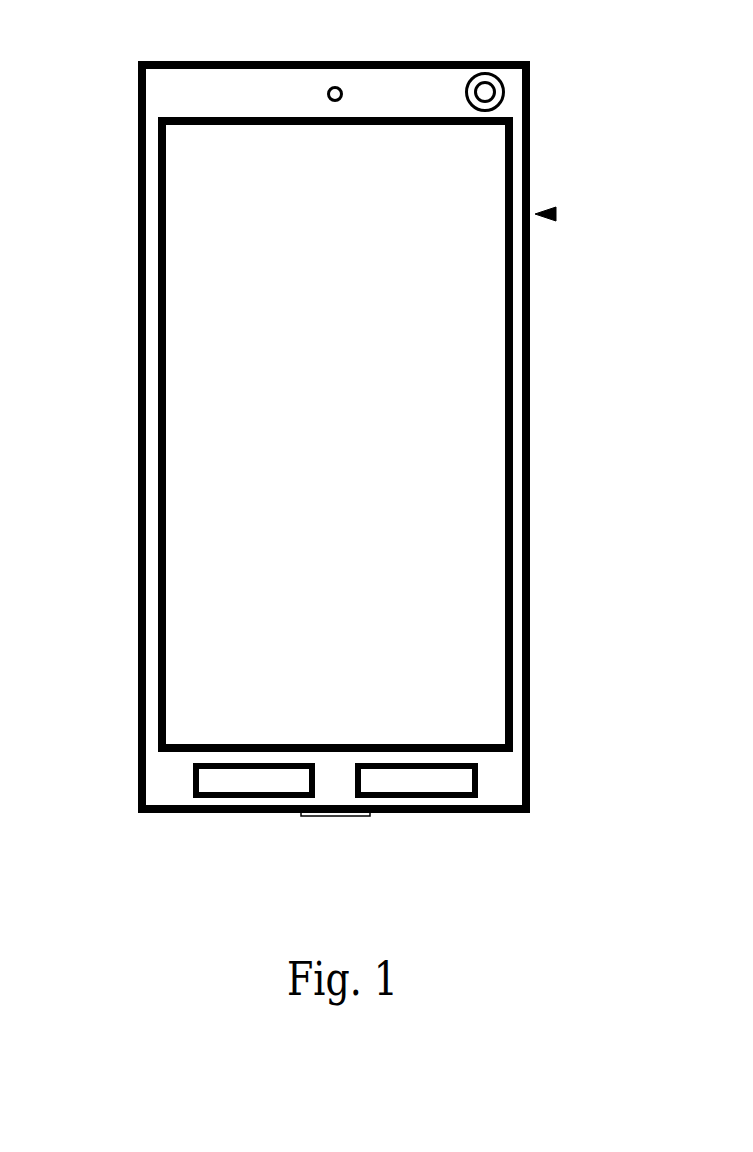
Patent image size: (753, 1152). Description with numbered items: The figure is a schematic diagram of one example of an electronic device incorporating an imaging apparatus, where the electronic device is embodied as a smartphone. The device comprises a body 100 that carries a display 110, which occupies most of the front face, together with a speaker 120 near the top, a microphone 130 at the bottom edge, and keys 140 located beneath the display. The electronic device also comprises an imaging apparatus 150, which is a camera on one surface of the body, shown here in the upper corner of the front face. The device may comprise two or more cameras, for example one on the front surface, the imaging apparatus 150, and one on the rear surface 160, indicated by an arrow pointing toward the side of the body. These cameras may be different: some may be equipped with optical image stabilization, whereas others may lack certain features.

The body 100 is at (153, 97).
The display 110 is at (187, 330).
The speaker 120 is at (335, 87).
The microphone 130 is at (335, 841).
The keys 140 is at (372, 765).
The imaging apparatus 150 is at (503, 80).
The rear surface camera 160 is at (555, 214).